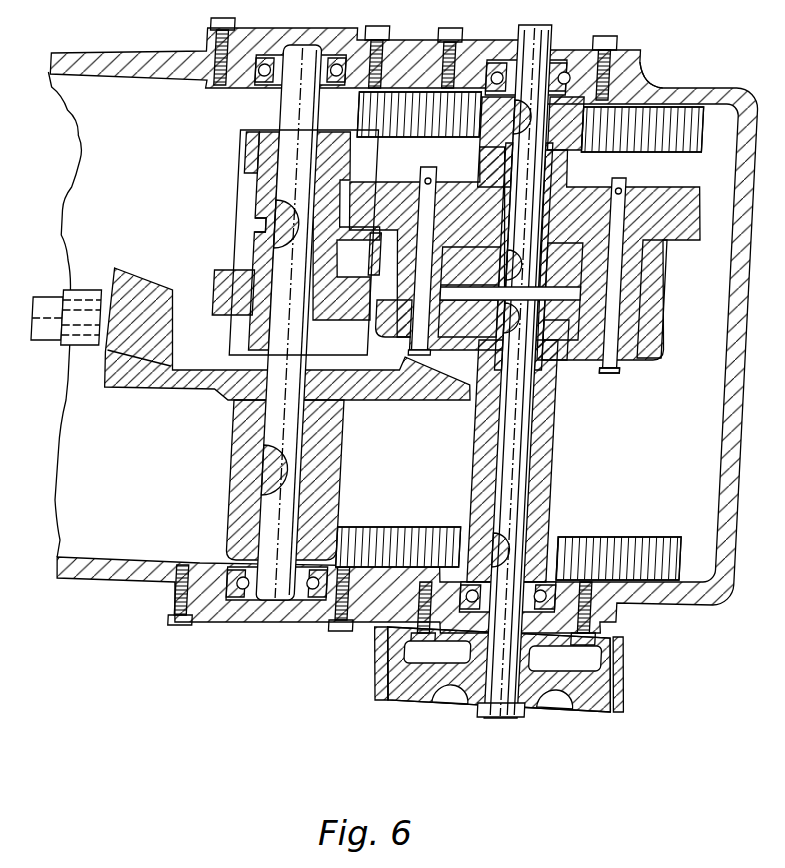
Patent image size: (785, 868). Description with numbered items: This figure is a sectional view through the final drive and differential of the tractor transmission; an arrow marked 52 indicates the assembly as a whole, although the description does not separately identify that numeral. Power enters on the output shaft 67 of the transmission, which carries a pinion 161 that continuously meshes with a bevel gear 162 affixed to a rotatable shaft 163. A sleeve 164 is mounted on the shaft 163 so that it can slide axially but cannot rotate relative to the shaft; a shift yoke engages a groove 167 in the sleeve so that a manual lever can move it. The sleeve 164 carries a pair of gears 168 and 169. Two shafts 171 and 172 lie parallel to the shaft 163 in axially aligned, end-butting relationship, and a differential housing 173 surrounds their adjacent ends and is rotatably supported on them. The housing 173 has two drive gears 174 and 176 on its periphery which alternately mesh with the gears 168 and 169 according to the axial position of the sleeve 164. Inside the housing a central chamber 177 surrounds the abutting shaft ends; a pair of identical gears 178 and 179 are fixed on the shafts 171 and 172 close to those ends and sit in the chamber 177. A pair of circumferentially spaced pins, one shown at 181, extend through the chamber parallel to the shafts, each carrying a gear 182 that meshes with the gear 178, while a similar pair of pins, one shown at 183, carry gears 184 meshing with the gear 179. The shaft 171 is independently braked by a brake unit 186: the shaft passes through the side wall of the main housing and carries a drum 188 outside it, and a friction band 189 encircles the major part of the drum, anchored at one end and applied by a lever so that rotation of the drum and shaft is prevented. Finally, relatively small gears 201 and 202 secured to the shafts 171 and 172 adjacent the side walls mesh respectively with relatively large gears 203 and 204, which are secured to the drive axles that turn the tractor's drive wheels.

The gear drive assembly 52 is at (232, 200).
The output shaft 67 is at (53, 308).
The pinion 161 is at (127, 278).
The bevel gear 162 is at (160, 378).
The rotatable shaft 163 is at (268, 338).
The sleeve 164 is at (257, 188).
The groove 167 is at (252, 221).
The gear 168 is at (212, 282).
The gear 169 is at (243, 152).
The shaft 171 is at (537, 450).
The shaft 172 is at (547, 172).
The differential housing 173 is at (664, 340).
The drive gear 174 is at (374, 260).
The drive gear 176 is at (362, 190).
The central chamber 177 is at (387, 323).
The gear 178 is at (567, 335).
The gear 179 is at (553, 254).
The pin 181 is at (615, 208).
The gear 182 is at (627, 345).
The pin 183 is at (438, 192).
The gear 184 is at (452, 246).
The brake unit 186 is at (368, 659).
The drum 188 is at (403, 703).
The friction band 189 is at (383, 700).
The gear 201 is at (547, 543).
The gear 202 is at (617, 73).
The gear 203 is at (610, 537).
The gear 204 is at (650, 113).